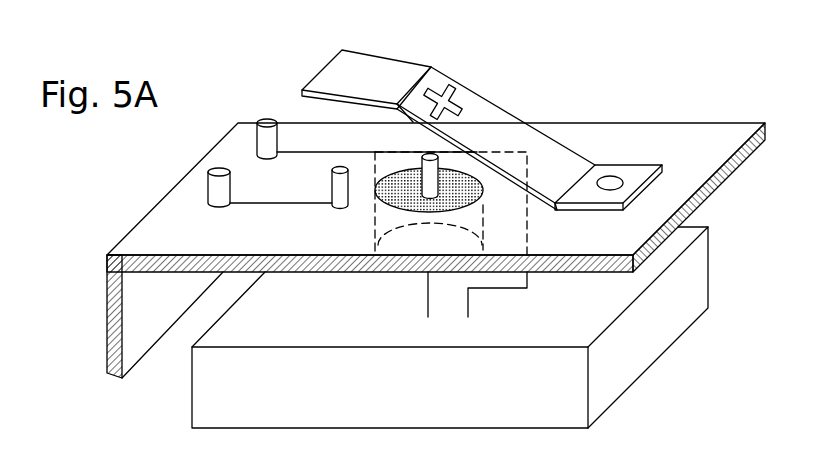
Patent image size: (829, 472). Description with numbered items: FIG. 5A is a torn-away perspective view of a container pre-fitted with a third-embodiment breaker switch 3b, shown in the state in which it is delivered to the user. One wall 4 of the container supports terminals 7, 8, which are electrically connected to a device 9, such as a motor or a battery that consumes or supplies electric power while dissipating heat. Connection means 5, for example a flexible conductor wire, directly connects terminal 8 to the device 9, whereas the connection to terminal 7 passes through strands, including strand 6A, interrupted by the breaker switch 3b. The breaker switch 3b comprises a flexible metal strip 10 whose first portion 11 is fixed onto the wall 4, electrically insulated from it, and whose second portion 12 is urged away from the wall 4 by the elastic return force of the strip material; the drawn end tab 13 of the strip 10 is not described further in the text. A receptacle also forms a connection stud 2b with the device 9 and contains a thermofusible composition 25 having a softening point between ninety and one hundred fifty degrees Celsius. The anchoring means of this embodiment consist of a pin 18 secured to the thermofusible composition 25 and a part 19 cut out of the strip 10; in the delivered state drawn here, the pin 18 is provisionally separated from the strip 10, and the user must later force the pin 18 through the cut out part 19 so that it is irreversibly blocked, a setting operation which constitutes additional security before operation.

The wall 4 is at (173, 222).
The terminal 7 is at (220, 167).
The terminal 8 is at (263, 119).
The connection means 5 is at (305, 150).
The strand of connection means 6A is at (238, 203).
The connection stud 2b is at (338, 197).
The bent end tab of spring strip 13 is at (380, 70).
The breaker switch 3b is at (472, 82).
The flexible metal strip 10 is at (517, 107).
The cut out part 19 is at (445, 92).
The second portion 12 is at (547, 152).
The first portion 11 is at (625, 176).
The thermofusible composition 25 is at (457, 190).
The pin 18 is at (430, 180).
The device 9 is at (645, 330).